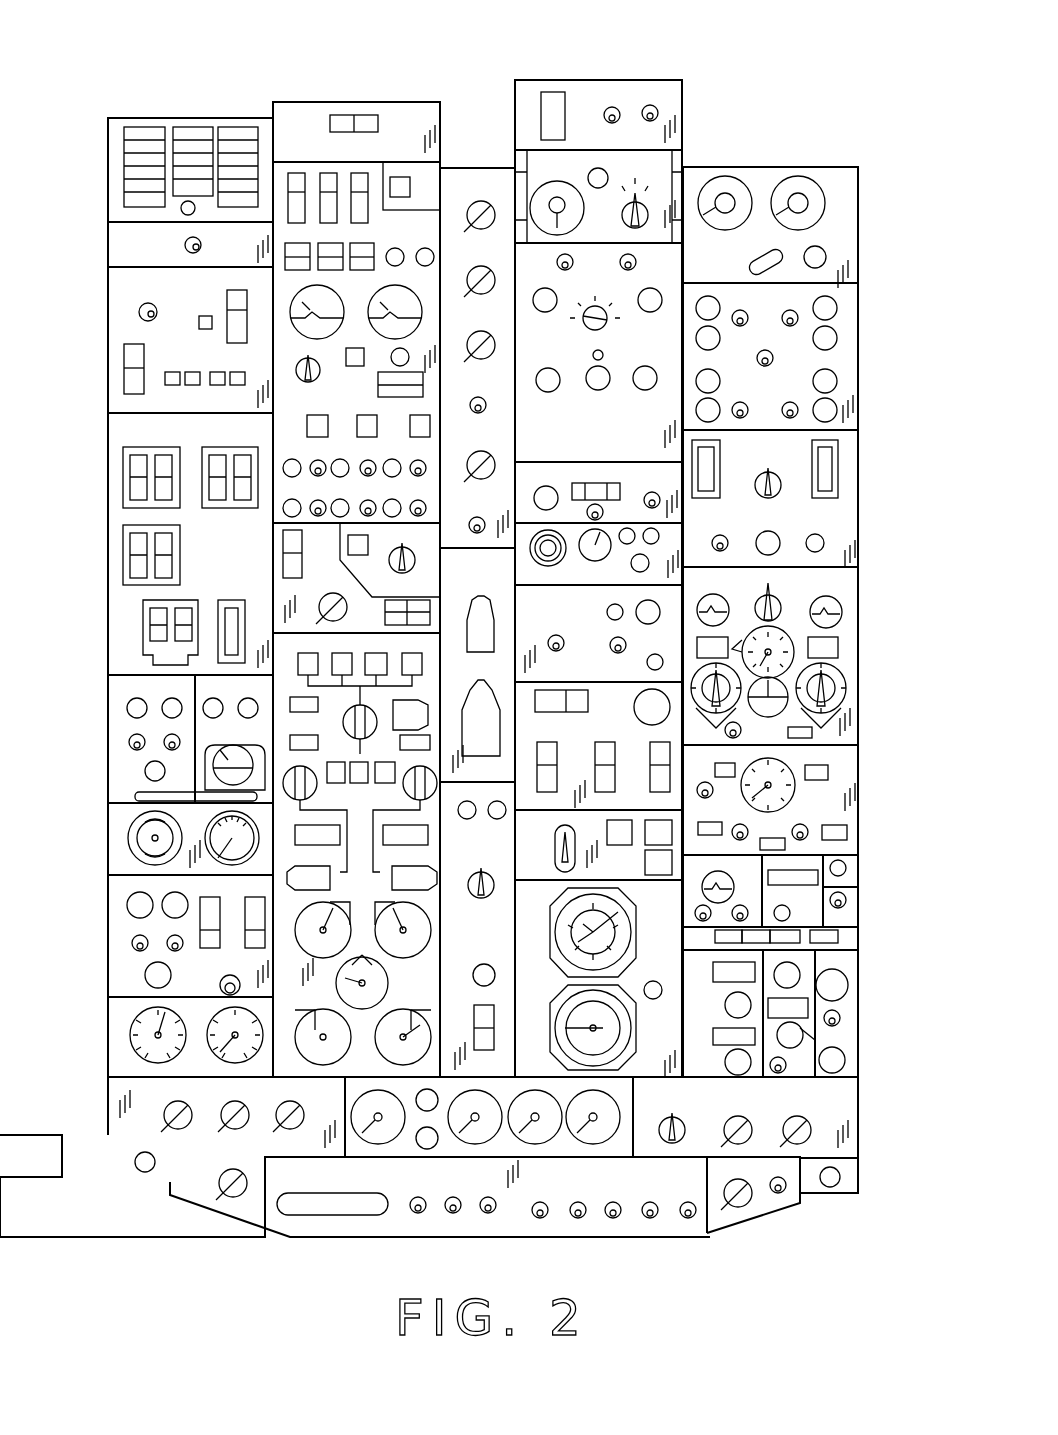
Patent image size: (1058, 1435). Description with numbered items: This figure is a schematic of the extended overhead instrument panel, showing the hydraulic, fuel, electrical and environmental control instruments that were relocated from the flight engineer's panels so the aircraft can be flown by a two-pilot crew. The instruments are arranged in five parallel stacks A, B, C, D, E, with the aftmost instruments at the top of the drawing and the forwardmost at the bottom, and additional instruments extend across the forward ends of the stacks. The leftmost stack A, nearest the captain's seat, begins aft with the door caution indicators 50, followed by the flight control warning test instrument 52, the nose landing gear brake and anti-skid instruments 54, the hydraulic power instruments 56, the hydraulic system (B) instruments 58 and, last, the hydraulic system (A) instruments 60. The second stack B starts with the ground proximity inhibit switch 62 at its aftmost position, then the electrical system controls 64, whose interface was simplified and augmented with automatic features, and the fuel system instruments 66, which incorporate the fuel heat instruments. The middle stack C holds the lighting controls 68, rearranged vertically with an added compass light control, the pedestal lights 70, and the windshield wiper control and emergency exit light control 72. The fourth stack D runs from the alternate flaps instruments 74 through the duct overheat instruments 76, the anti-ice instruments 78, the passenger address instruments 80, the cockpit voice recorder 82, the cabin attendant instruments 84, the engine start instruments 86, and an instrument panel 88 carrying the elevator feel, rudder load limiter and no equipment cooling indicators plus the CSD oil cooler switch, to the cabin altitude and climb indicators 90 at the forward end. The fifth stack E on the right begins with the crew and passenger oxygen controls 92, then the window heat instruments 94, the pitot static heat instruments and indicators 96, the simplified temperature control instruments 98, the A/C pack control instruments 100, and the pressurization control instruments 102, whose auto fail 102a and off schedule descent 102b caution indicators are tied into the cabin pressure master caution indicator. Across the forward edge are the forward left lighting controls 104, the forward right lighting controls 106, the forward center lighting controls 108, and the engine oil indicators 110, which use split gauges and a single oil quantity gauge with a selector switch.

The first stack A is at (157, 95).
The second stack B is at (300, 88).
The third stack C is at (455, 120).
The fourth stack D is at (571, 63).
The fifth stack E is at (805, 130).
The door caution indicators 50 is at (196, 118).
The flight control warning test instrument 52 is at (105, 243).
The nose landing gear brake and anti-skid instruments 54 is at (166, 340).
The hydraulic power instruments 56 is at (105, 590).
The hydraulic system (B) instruments 58 is at (107, 737).
The hydraulic system (A) instruments 60 is at (105, 975).
The ground proximity inhibit switch 62 is at (360, 102).
The electrical system controls 64 is at (265, 373).
The fuel system instruments 66 is at (290, 910).
The lighting controls 68 is at (483, 168).
The pedestal lights 70 is at (107, 700).
The windshield wiper control and emergency exit light control 72 is at (465, 940).
The alternate flaps instruments 74 is at (603, 78).
The duct overheat instruments 76 is at (668, 197).
The anti-ice instruments 78 is at (650, 335).
The passenger address instruments 80 is at (652, 470).
The cockpit voice recorder 82 is at (655, 552).
The cabin attendant instruments 84 is at (655, 630).
The engine start instruments 86 is at (652, 743).
The instrument panel 88 is at (683, 850).
The cabin altitude and climb indicators 90 is at (652, 1018).
The crew and passenger oxygen controls 92 is at (775, 173).
The window heat instruments 94 is at (835, 358).
The pitot static heat instruments and indicators 96 is at (830, 508).
The temperature control instruments 98 is at (848, 666).
The A/C pack control instruments 100 is at (815, 803).
The pressurization control instruments 102 is at (840, 960).
The auto fail caution indicator 102a is at (740, 908).
The off schedule descent caution indicator 102b is at (775, 920).
The forward left lighting controls 104 is at (200, 1165).
The forward right lighting controls 106 is at (835, 1113).
The forward center lighting controls 108 is at (348, 1222).
The engine oil indicators 110 is at (500, 1143).